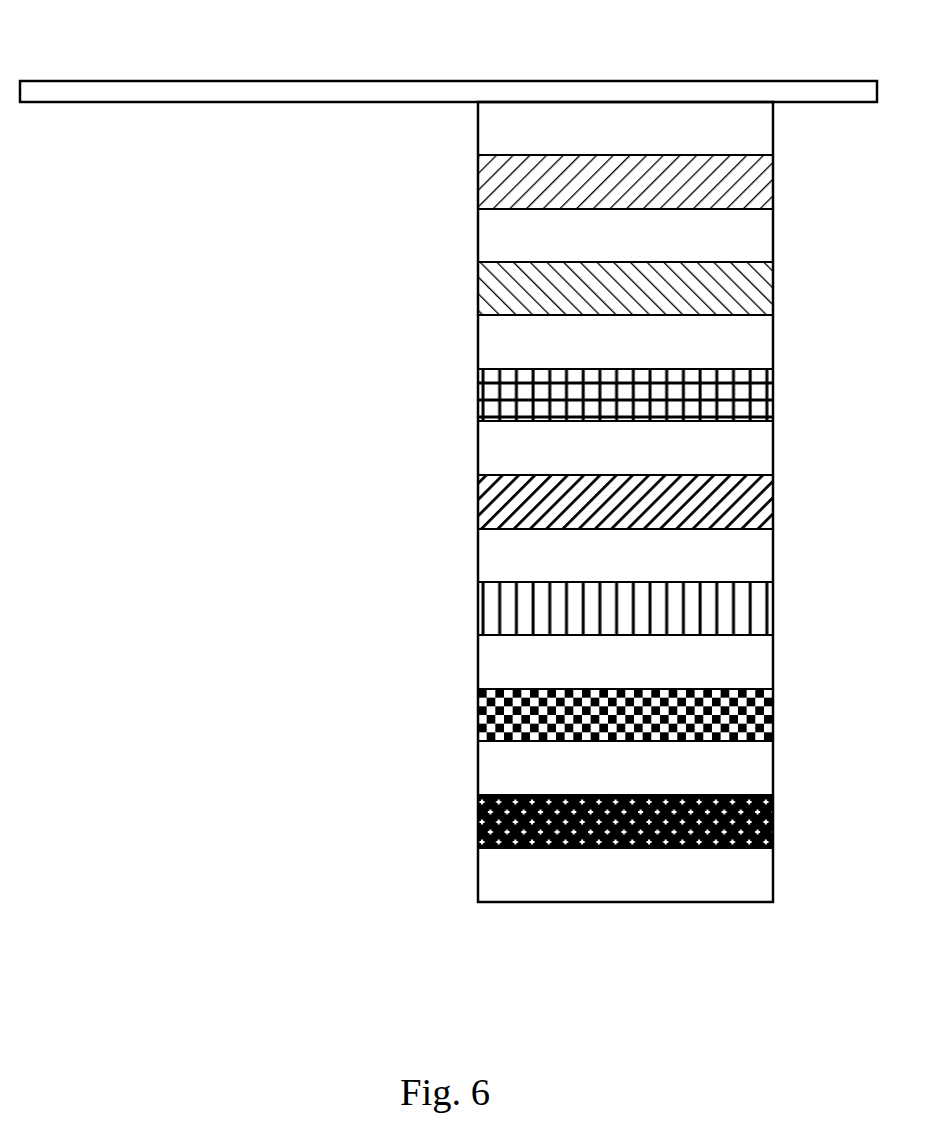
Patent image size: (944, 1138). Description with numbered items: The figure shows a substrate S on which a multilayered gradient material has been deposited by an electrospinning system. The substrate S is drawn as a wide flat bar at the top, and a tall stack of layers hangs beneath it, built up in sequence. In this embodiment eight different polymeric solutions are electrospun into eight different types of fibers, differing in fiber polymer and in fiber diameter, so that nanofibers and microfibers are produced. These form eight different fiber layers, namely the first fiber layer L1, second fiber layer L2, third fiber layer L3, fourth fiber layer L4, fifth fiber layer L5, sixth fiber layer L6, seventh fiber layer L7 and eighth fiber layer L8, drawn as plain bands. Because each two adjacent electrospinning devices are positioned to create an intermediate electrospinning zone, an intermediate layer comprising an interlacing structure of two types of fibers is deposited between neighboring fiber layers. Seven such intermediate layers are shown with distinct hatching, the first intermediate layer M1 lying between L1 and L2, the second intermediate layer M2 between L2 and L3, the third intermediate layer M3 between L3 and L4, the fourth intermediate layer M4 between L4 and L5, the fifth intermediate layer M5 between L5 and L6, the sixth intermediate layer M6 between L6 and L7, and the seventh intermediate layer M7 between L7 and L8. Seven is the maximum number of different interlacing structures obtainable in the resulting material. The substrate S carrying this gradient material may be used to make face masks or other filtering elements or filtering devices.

The substrate S is at (460, 68).
The first fiber layer L1 is at (593, 128).
The first intermediate layer M1 is at (593, 182).
The second fiber layer L2 is at (593, 235).
The second intermediate layer M2 is at (593, 288).
The third fiber layer L3 is at (593, 342).
The third intermediate layer M3 is at (593, 395).
The fourth fiber layer L4 is at (593, 448).
The fourth intermediate layer M4 is at (593, 502).
The fifth fiber layer L5 is at (593, 555).
The fifth intermediate layer M5 is at (593, 608).
The sixth fiber layer L6 is at (593, 662).
The sixth intermediate layer M6 is at (593, 715).
The seventh fiber layer L7 is at (593, 768).
The seventh intermediate layer M7 is at (593, 821).
The eighth fiber layer L8 is at (593, 875).